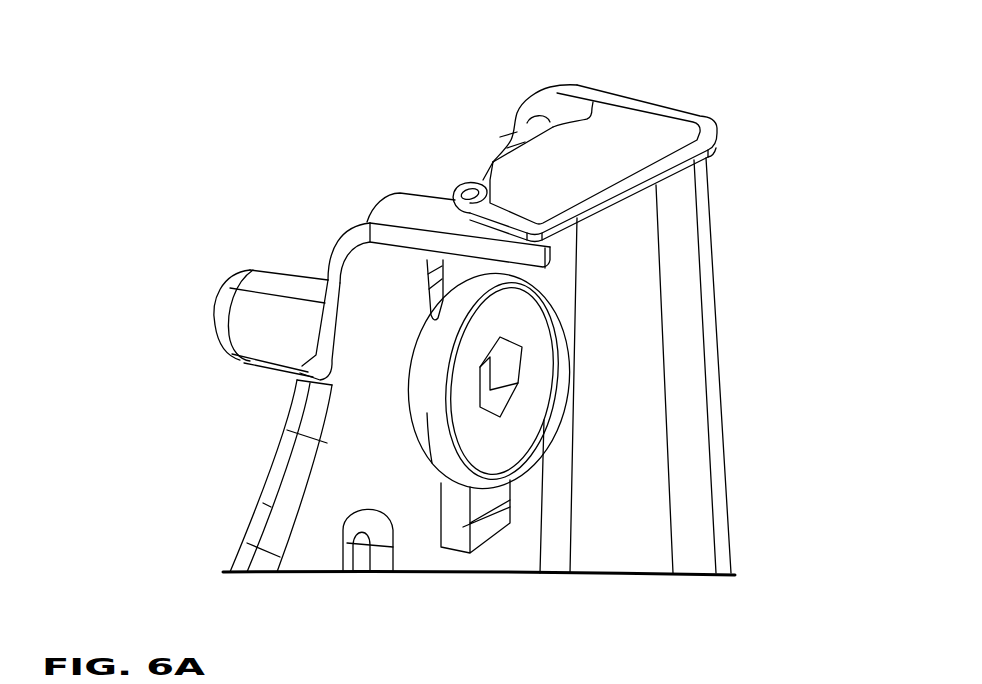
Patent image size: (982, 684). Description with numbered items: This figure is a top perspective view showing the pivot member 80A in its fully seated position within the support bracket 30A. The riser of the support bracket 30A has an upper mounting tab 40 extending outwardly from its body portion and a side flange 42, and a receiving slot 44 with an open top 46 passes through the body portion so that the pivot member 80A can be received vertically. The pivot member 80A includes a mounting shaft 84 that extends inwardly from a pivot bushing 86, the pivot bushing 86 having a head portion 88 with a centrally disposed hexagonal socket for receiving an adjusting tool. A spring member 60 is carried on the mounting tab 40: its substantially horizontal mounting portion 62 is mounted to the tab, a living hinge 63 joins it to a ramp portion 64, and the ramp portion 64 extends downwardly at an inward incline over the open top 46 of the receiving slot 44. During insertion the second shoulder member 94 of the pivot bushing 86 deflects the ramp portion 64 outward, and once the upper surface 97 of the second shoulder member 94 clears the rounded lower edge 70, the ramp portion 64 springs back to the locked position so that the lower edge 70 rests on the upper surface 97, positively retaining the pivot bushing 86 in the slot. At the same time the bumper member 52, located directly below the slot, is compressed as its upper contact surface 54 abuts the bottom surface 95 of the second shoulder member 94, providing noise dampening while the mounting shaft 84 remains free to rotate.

The support bracket 30A is at (727, 80).
The upper mounting tab 40 is at (708, 130).
The side flange 42 is at (705, 290).
The receiving slot 44 is at (418, 314).
The open top 46 is at (443, 188).
The bumper member 52 is at (497, 523).
The upper contact surface 54 is at (455, 497).
The spring member 60 is at (518, 98).
The mounting portion 62 is at (625, 125).
The living hinge 63 is at (466, 182).
The ramp portion 64 is at (458, 283).
The lower edge 70 is at (473, 298).
The pivot member 80A is at (562, 451).
The mounting shaft 84 is at (281, 306).
The pivot bushing 86 is at (605, 371).
The head portion 88 is at (527, 397).
The second shoulder member 94 is at (430, 417).
The bottom surface 95 is at (475, 483).
The upper surface 97 is at (513, 294).